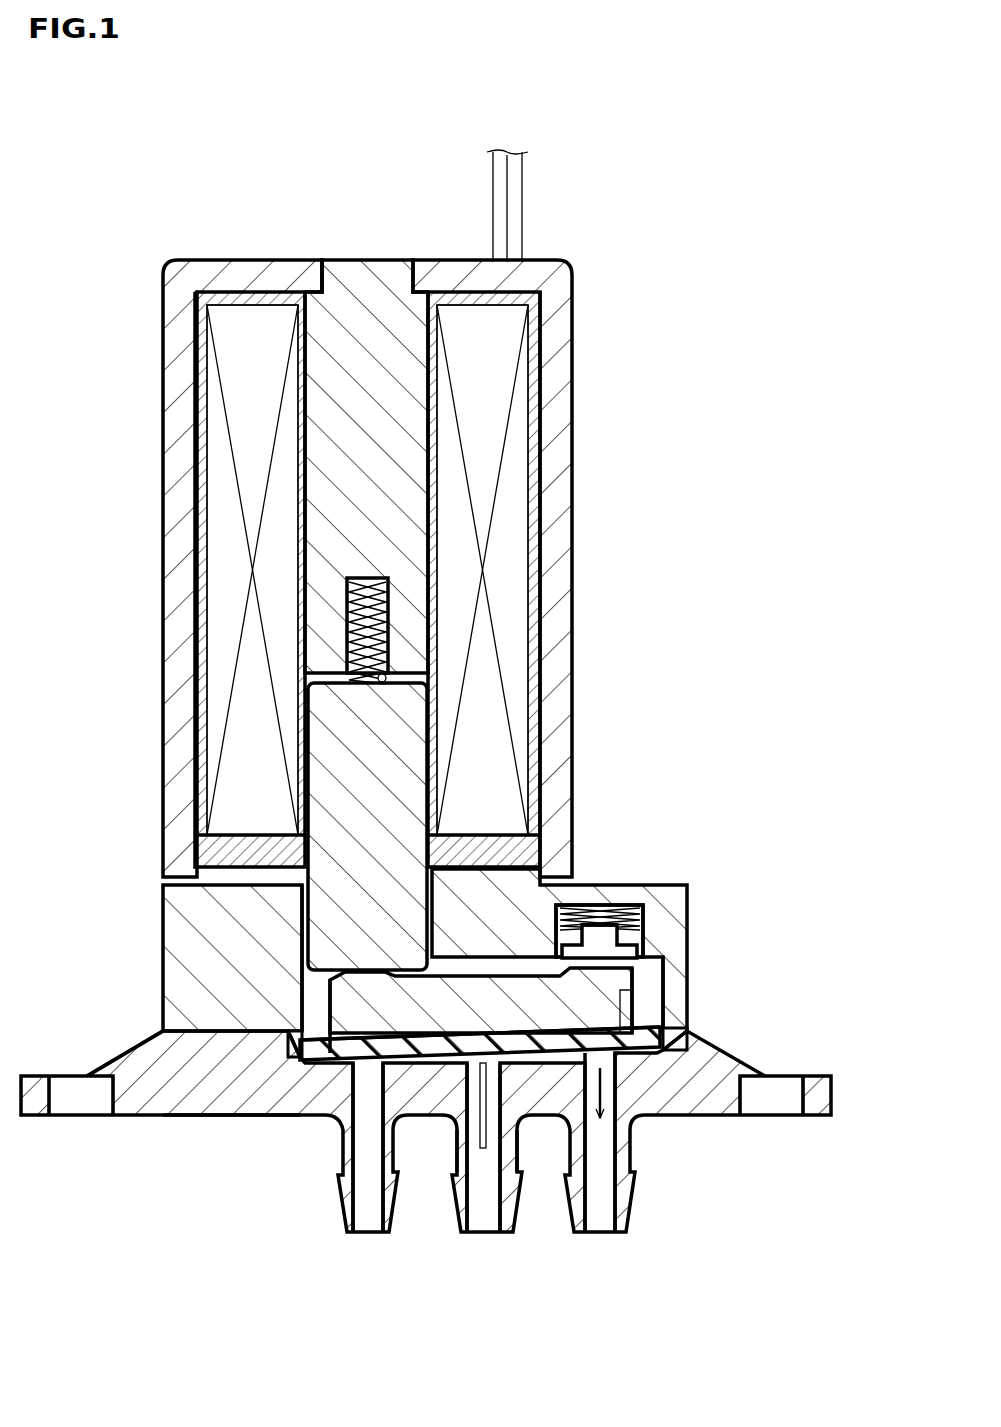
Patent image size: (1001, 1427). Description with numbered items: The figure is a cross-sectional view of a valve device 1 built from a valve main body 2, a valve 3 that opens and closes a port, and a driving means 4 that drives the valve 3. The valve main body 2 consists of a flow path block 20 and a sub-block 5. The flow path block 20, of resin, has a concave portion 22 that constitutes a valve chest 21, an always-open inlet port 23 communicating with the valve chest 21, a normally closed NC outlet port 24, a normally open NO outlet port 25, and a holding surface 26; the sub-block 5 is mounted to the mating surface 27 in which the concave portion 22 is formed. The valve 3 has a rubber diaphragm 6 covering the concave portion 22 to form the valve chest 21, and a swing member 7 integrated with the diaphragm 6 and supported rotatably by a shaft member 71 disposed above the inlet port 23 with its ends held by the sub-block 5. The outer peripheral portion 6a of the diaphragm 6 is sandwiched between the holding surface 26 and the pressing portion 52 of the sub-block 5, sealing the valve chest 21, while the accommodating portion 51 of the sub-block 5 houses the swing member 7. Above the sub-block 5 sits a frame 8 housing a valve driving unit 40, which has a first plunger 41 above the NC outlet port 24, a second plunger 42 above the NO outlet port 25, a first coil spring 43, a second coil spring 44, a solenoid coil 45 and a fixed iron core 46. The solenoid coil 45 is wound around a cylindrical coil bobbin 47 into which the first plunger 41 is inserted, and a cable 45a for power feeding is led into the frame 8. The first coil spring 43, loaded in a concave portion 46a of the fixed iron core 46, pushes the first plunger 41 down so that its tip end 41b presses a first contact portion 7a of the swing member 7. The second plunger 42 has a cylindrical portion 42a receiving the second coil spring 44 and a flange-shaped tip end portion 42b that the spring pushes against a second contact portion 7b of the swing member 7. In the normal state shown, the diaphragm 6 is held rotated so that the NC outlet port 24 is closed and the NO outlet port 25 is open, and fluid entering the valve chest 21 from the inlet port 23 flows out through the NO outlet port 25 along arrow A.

The valve device 1 is at (690, 185).
The valve main body 2 is at (148, 1027).
The valve 3 is at (598, 1000).
The driving means 4 is at (487, 720).
The sub-block 5 is at (205, 905).
The diaphragm 6 is at (650, 1052).
The peripheral portion 6a is at (310, 1062).
The swing member 7 is at (362, 1052).
The first contact portion 7a is at (305, 982).
The second contact portion 7b is at (640, 962).
The frame 8 is at (560, 600).
The flow path block 20 is at (228, 1080).
The valve chest 21 is at (483, 1075).
The concave portion 22 is at (525, 1080).
The inlet port 23 is at (487, 1215).
The NC outlet port 24 is at (375, 1215).
The NO outlet port 25 is at (610, 1220).
The holding surface 26 is at (300, 1057).
The mating surface 27 is at (160, 1032).
The valve driving unit 40 is at (500, 770).
The first plunger 41 is at (330, 765).
The tip end 41b is at (303, 930).
The second plunger 42 is at (600, 940).
The cylindrical portion 42a is at (620, 955).
The tip end portion 42b is at (600, 920).
The first coil spring 43 is at (320, 545).
The second coil spring 44 is at (610, 925).
The solenoid coil 45 is at (253, 445).
The cable 45a is at (515, 170).
The fixed iron core 46 is at (340, 385).
The concave portion 46a is at (350, 620).
The coil bobbin 47 is at (412, 400).
The accommodating portion 51 is at (640, 1000).
The pressing portion 52 is at (293, 1030).
The shaft member 71 is at (380, 1052).
The arrow A is at (615, 1062).